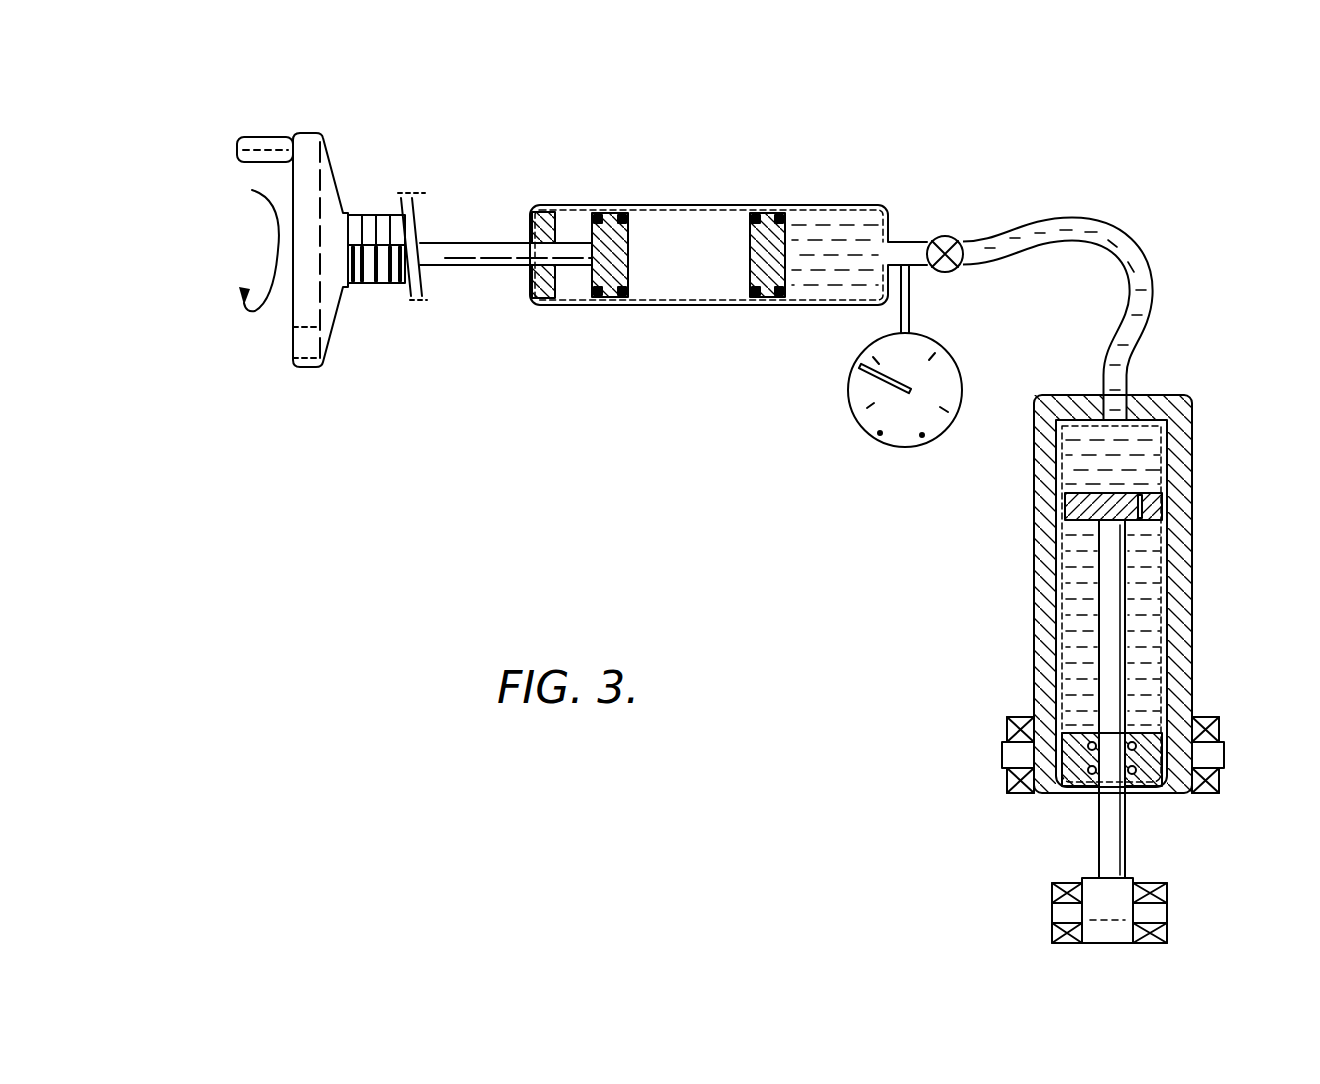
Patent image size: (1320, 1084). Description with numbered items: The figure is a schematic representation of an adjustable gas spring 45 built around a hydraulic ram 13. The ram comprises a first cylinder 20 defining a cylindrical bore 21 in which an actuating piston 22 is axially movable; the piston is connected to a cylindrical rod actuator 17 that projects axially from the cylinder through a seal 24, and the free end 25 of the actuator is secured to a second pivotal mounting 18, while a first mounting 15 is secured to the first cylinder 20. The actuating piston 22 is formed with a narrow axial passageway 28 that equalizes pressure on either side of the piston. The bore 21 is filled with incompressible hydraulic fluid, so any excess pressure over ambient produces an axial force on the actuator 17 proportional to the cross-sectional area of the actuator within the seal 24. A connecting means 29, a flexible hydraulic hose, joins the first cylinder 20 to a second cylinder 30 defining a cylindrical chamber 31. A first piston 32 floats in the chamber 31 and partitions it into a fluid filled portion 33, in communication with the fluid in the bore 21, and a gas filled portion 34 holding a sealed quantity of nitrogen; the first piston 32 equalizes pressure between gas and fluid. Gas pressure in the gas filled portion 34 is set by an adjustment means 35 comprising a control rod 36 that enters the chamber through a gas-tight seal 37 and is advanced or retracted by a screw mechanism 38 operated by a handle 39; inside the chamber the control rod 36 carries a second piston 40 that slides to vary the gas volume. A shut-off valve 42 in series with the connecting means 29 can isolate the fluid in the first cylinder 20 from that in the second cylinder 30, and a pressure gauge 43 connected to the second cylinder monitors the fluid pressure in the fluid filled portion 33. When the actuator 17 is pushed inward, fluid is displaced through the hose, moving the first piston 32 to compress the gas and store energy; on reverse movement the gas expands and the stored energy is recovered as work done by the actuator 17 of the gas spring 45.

The hydraulic ram 13 is at (1043, 598).
The first mounting 15 is at (1220, 782).
The cylindrical rod actuator 17 is at (1097, 830).
The second pivotal mounting 18 is at (1167, 932).
The first cylinder 20 is at (1183, 553).
The cylindrical bore 21 is at (1147, 627).
The actuating piston 22 is at (1065, 505).
The seal 24 is at (1140, 749).
The free end 25 is at (1122, 875).
The narrow axial passageway 28 is at (1143, 505).
The connecting means 29 is at (1062, 217).
The second cylinder 30 is at (695, 207).
The cylindrical chamber 31 is at (708, 258).
The first piston 32 is at (767, 238).
The fluid filled portion 33 is at (846, 227).
The gas filled portion 34 is at (648, 278).
The adjustment means 35 is at (386, 297).
The control rod 36 is at (466, 248).
The gas-tight seal 37 is at (527, 282).
The screw mechanism 38 is at (372, 197).
The handle 39 is at (247, 137).
The second piston 40 is at (633, 238).
The shut-off valve 42 is at (943, 236).
The pressure gauge 43 is at (850, 421).
The gas spring 45 is at (583, 517).